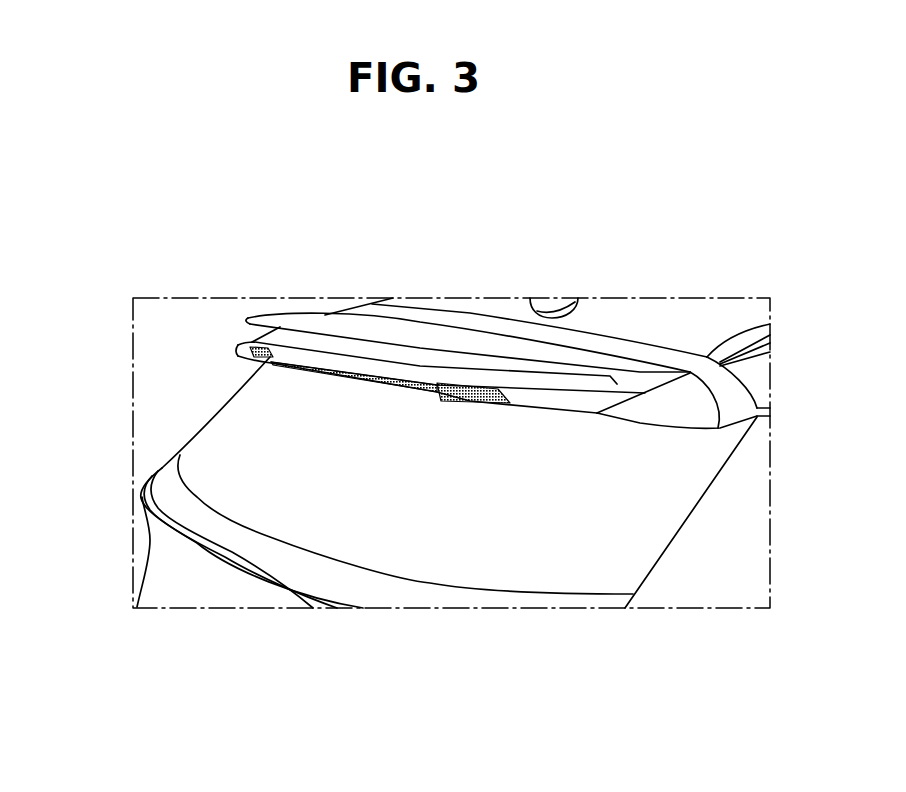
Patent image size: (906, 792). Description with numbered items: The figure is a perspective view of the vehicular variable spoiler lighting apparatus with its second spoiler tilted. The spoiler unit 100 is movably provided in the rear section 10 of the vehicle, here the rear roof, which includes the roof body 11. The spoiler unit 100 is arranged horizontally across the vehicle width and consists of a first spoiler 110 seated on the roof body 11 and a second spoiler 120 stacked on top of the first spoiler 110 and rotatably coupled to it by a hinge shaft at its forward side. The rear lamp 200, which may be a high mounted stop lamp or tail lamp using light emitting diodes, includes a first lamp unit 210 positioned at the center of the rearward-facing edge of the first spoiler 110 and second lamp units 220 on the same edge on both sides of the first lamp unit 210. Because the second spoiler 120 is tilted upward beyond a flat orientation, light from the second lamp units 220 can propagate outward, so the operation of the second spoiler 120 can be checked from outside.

The rear section 10 is at (166, 438).
The roof body 11 is at (680, 323).
The spoiler unit 100 is at (278, 208).
The first spoiler 110 is at (238, 345).
The second spoiler 120 is at (296, 340).
The rear lamp 200 is at (457, 708).
The first lamp unit 210 is at (338, 372).
The second lamp units 220 is at (262, 362).